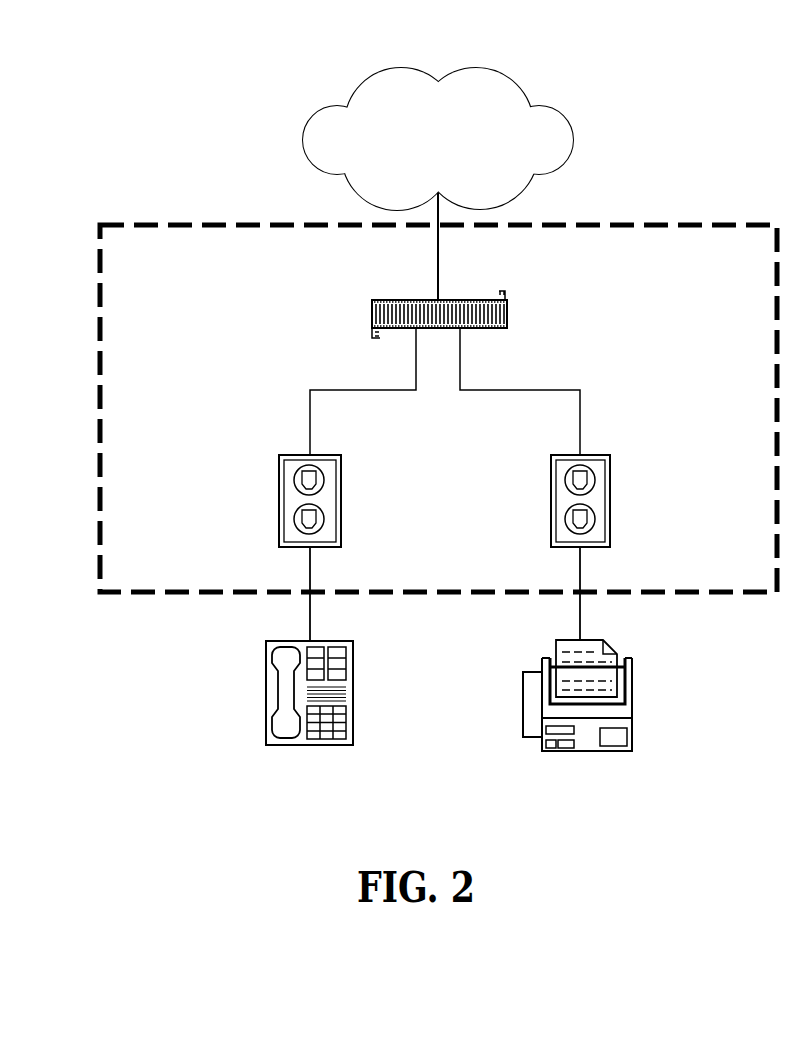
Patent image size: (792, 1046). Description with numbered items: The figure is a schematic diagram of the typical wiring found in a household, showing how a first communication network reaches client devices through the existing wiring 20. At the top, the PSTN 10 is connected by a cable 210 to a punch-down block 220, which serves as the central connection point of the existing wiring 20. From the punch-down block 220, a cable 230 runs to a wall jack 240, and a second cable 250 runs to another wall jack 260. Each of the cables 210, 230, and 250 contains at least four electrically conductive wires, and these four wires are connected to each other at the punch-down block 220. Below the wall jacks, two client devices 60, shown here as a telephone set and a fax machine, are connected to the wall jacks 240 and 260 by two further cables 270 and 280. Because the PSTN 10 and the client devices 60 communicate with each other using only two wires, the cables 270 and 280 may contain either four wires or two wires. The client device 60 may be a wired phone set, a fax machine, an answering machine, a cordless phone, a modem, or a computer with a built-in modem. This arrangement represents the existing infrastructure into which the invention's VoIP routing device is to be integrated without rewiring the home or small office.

The PSTN 10 is at (393, 68).
The existing wiring 20 is at (198, 225).
The cable 210 is at (440, 280).
The punch-down block 220 is at (375, 298).
The cable 230 is at (338, 390).
The wall jack 240 is at (278, 490).
The cable 250 is at (548, 390).
The wall jack 260 is at (612, 498).
The cable 270 is at (310, 610).
The cable 280 is at (580, 613).
The client device 60 is at (635, 710).